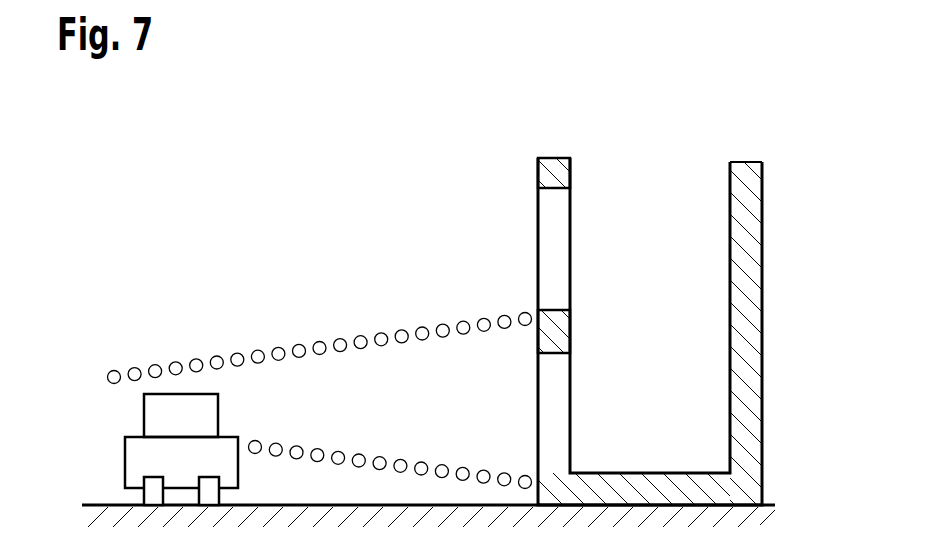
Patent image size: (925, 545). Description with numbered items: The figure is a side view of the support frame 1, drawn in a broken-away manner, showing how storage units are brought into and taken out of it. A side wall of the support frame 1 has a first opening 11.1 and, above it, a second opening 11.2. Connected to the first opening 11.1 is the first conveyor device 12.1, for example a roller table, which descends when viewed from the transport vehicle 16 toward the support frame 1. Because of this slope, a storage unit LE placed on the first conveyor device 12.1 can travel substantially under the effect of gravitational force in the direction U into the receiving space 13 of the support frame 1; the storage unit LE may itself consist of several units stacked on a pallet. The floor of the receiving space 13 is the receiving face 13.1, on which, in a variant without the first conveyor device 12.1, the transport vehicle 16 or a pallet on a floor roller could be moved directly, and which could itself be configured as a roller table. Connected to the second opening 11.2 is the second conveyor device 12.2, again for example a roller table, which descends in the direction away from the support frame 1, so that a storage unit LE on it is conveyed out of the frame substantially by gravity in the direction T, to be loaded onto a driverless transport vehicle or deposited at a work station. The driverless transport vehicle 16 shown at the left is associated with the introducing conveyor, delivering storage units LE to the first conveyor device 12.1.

The support frame 1 is at (637, 304).
The first opening 11.1 is at (550, 395).
The second opening 11.2 is at (550, 228).
The first conveyor device 12.1 is at (430, 456).
The second conveyor device 12.2 is at (290, 338).
The receiving space 13 is at (738, 428).
The receiving face 13.1 is at (640, 473).
The transport vehicle 16 is at (136, 449).
The storage unit LE is at (157, 412).
The direction T is at (340, 316).
The direction U is at (350, 438).